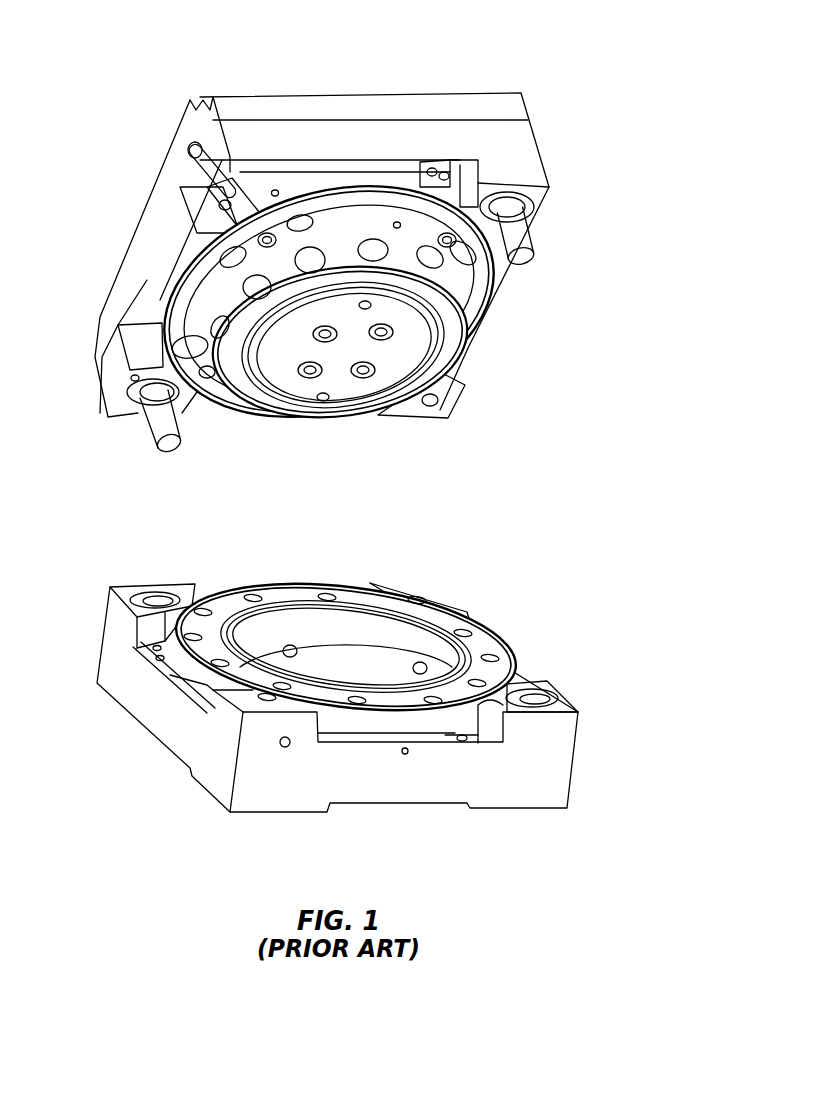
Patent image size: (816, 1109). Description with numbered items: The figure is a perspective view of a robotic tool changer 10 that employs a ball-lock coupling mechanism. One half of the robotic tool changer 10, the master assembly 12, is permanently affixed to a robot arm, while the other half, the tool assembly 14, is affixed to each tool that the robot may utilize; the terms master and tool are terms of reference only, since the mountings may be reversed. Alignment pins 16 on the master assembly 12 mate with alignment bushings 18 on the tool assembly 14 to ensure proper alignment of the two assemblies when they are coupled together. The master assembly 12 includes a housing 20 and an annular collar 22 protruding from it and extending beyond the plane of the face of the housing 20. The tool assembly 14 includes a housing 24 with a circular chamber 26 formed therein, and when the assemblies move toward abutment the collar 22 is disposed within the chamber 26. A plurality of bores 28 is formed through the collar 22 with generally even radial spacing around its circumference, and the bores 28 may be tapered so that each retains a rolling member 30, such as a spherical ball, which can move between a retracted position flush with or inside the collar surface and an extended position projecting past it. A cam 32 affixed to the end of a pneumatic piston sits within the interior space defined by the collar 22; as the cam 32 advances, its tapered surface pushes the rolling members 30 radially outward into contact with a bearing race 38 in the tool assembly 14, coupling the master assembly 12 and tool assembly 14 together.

The robotic tool changer 10 is at (640, 458).
The master assembly 12 is at (512, 343).
The tool assembly 14 is at (612, 762).
The alignment pins 16 is at (517, 237).
The alignment bushings 18 is at (143, 592).
The housing 20 is at (520, 153).
The annular collar 22 is at (305, 168).
The housing 24 is at (515, 778).
The circular chamber 26 is at (364, 670).
The bores 28 is at (340, 242).
The rolling members 30 is at (256, 286).
The cam 32 is at (400, 353).
The bearing race 38 is at (443, 660).